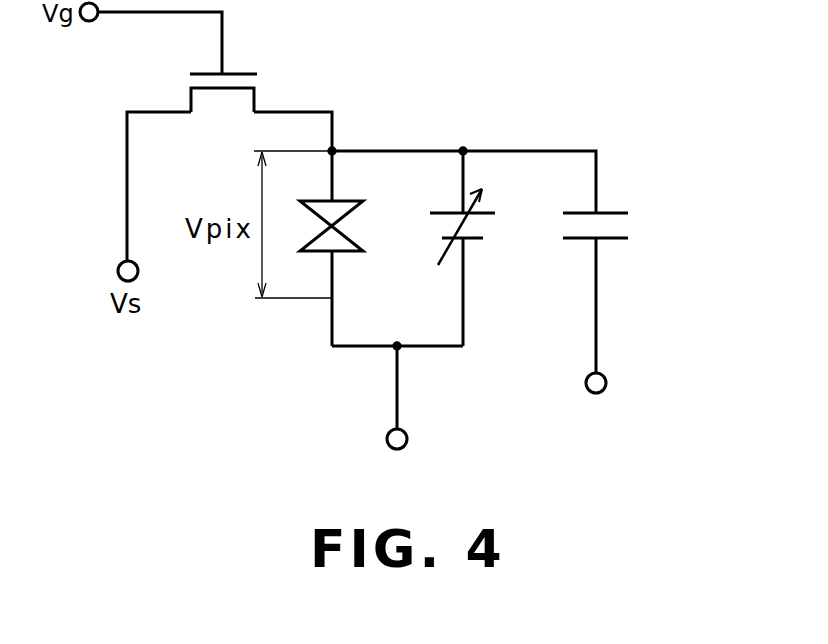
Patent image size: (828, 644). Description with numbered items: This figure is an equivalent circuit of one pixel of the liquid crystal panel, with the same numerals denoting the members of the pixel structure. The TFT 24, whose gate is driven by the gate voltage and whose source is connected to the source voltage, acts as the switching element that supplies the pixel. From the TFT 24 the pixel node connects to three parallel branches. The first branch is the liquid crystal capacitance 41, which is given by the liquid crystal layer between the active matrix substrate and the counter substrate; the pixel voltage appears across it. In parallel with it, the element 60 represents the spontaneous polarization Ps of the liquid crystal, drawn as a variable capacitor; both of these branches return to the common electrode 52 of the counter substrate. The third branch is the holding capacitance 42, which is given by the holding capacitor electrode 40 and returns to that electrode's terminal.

The TFT 24 is at (260, 77).
The liquid crystal capacitance 41 is at (352, 258).
The element representing spontaneous polarization Ps 60 is at (480, 250).
The holding capacitance 42 is at (617, 250).
The holding capacitor electrode 40 is at (601, 402).
The common electrode 52 is at (399, 416).